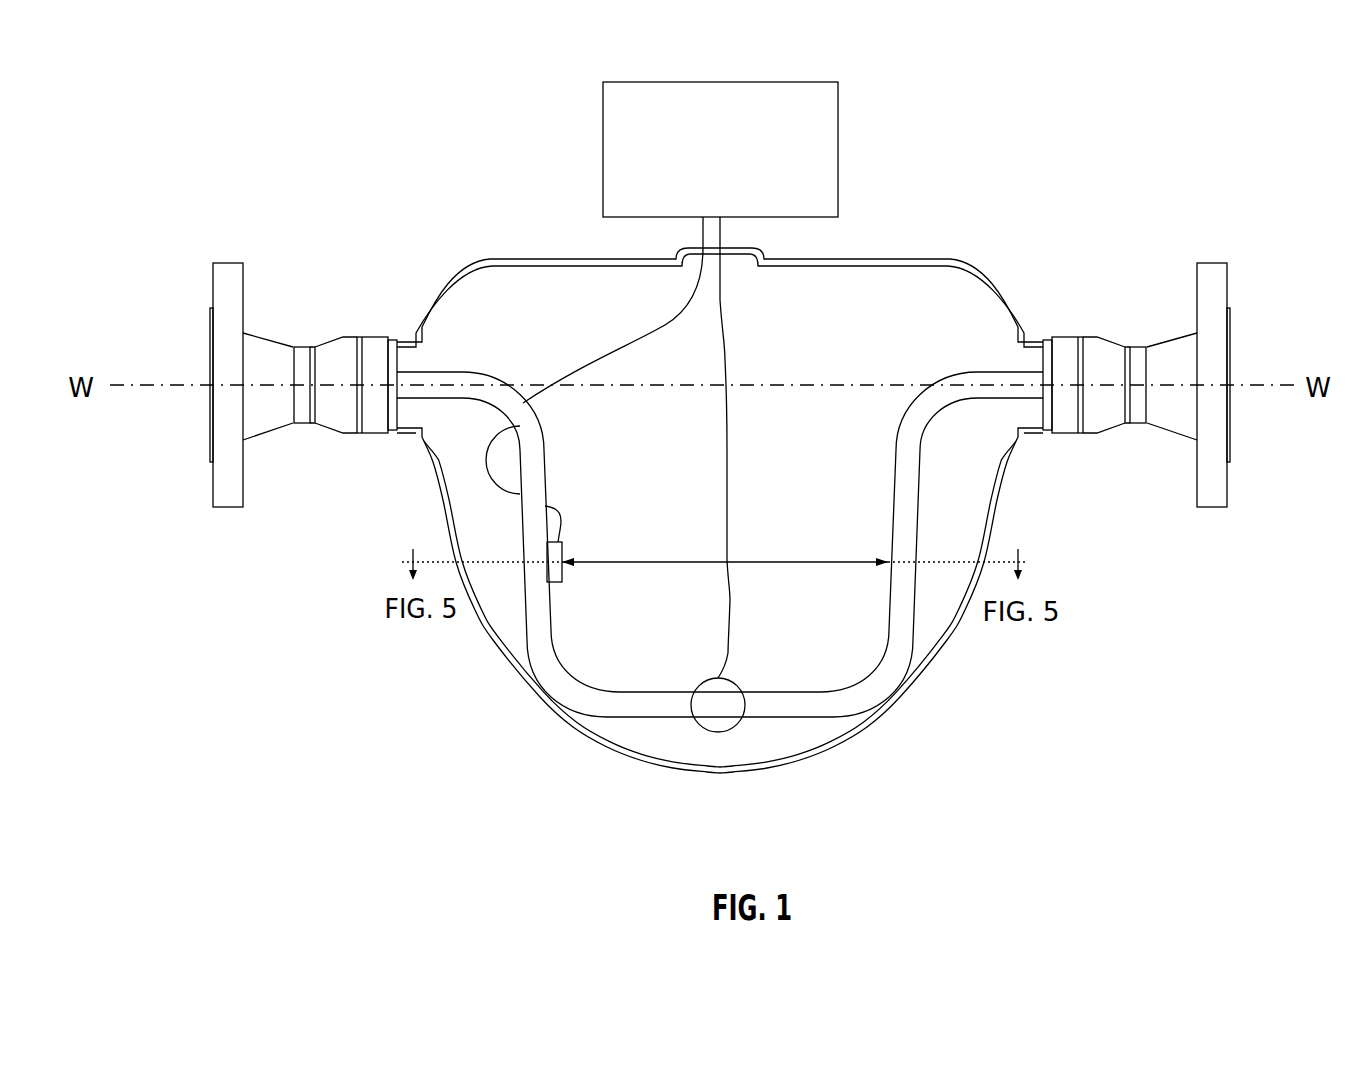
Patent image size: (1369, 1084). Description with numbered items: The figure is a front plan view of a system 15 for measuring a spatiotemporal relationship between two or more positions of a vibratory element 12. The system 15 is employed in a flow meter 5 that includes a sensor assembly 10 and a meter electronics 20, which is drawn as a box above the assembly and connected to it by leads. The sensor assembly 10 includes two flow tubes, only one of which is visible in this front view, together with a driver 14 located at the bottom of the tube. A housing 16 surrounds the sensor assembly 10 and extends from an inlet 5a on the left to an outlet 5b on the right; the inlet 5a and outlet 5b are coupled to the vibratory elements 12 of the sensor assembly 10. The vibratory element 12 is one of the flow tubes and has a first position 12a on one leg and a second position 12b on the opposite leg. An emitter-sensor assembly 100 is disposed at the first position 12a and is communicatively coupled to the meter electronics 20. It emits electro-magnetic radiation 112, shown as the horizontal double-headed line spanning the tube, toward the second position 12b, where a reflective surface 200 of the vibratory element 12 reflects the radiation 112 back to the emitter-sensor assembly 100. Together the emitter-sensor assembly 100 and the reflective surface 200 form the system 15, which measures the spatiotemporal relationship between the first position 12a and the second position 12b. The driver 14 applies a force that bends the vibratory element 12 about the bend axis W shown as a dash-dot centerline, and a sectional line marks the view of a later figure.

The flow meter 5 is at (1090, 154).
The inlet 5a is at (200, 415).
The outlet 5b is at (1238, 416).
The sensor assembly 10 is at (966, 669).
The vibratory element 12 is at (630, 692).
The first position 12a is at (580, 543).
The second position 12b is at (884, 550).
The driver 14 is at (717, 732).
The system 15 is at (773, 440).
The housing 16 is at (768, 769).
The meter electronics 20 is at (706, 197).
The emitter-sensor assembly 100 is at (548, 582).
The electro-magnetic radiation 112 is at (738, 562).
The reflective surface 200 is at (890, 575).